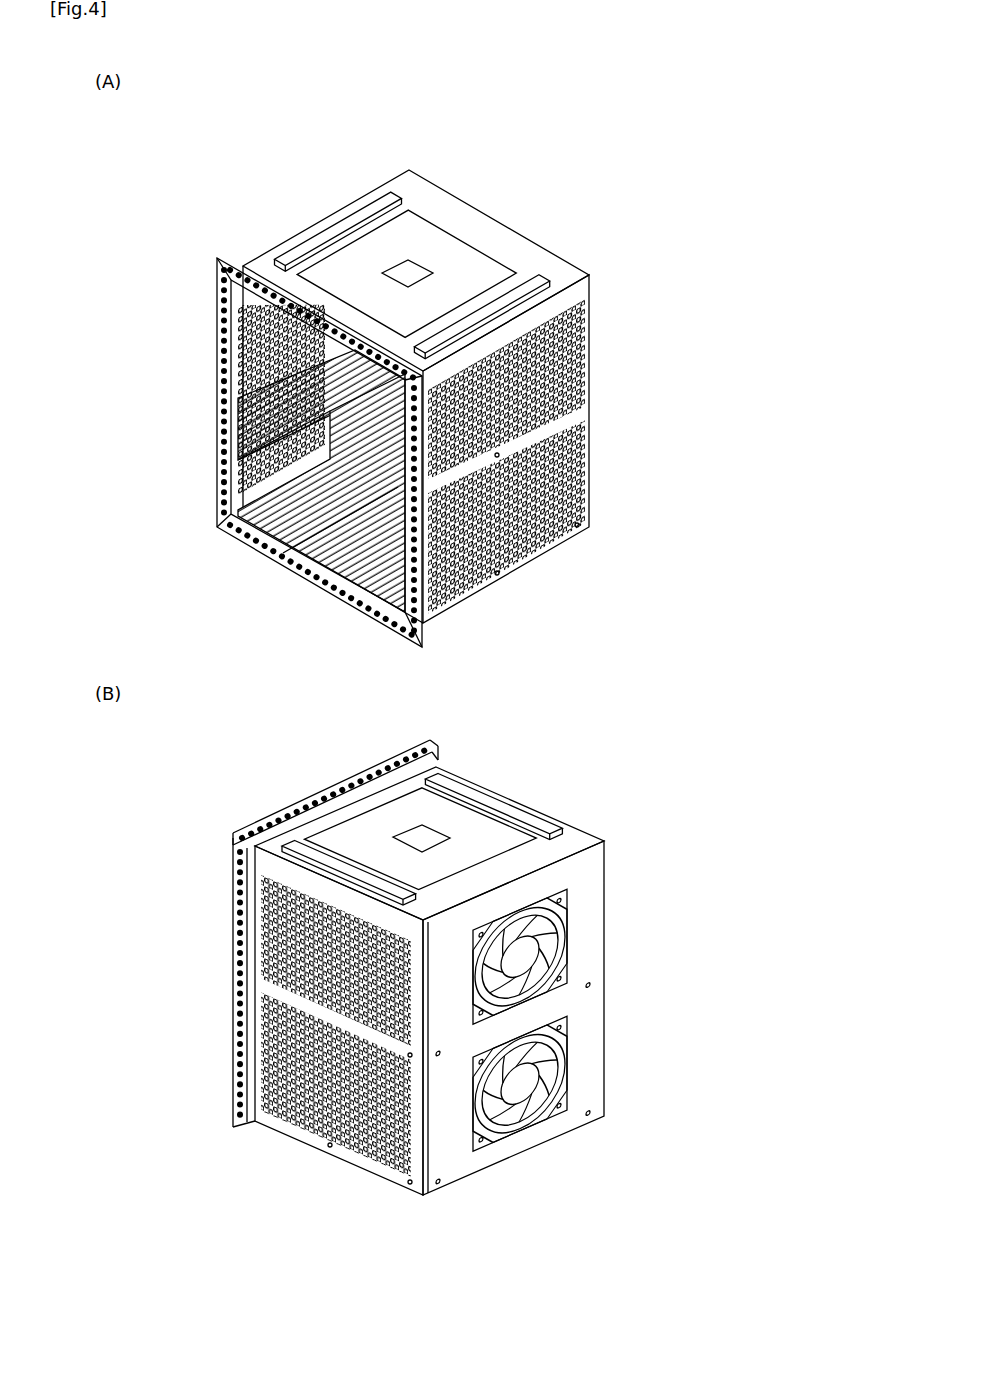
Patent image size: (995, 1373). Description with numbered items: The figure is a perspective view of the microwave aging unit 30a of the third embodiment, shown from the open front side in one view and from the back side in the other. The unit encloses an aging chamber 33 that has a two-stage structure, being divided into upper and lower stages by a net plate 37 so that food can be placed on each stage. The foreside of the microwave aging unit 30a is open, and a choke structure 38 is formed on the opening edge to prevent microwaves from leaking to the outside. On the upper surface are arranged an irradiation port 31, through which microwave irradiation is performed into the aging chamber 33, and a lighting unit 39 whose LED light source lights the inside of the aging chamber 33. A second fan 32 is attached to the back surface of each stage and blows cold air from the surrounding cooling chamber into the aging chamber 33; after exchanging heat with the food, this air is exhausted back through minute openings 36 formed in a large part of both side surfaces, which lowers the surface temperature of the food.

The microwave aging unit 30a is at (578, 228).
The irradiation port 31 is at (410, 265).
The second fan 32 is at (572, 952).
The aging chamber 33 is at (240, 352).
The minute openings 36 is at (576, 455).
The net plate 37 is at (245, 458).
The choke structure 38 is at (232, 262).
The lighting unit 39 is at (340, 222).